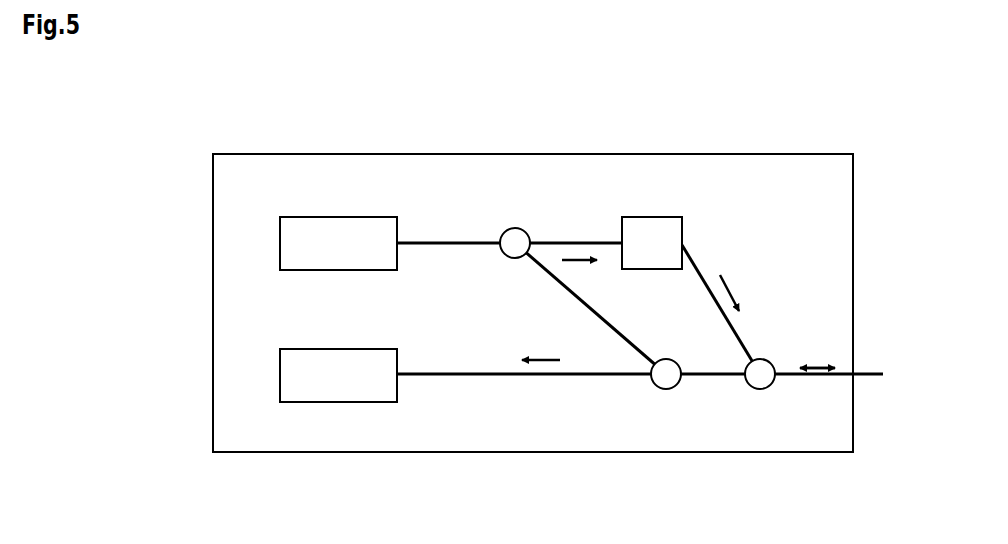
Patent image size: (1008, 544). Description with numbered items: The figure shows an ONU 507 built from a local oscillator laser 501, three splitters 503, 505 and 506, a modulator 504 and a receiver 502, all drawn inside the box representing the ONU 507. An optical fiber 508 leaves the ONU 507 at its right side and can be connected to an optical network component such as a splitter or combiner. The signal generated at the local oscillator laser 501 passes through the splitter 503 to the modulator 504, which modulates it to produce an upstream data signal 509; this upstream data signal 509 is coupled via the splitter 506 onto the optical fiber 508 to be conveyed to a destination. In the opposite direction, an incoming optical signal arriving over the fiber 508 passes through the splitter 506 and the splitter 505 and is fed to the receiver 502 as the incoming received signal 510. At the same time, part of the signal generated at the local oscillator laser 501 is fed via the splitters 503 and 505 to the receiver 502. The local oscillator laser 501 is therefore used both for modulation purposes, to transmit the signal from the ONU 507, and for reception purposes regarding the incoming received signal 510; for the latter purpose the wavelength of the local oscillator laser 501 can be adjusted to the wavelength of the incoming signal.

The local oscillator laser 501 is at (280, 243).
The receiver 502 is at (280, 375).
The splitter 503 is at (513, 258).
The modulator 504 is at (678, 223).
The splitter 505 is at (657, 388).
The splitter 506 is at (763, 389).
The ONU 507 is at (603, 452).
The optical fiber 508 is at (862, 377).
The upstream data signal 509 is at (723, 309).
The incoming received signal 510 is at (521, 381).